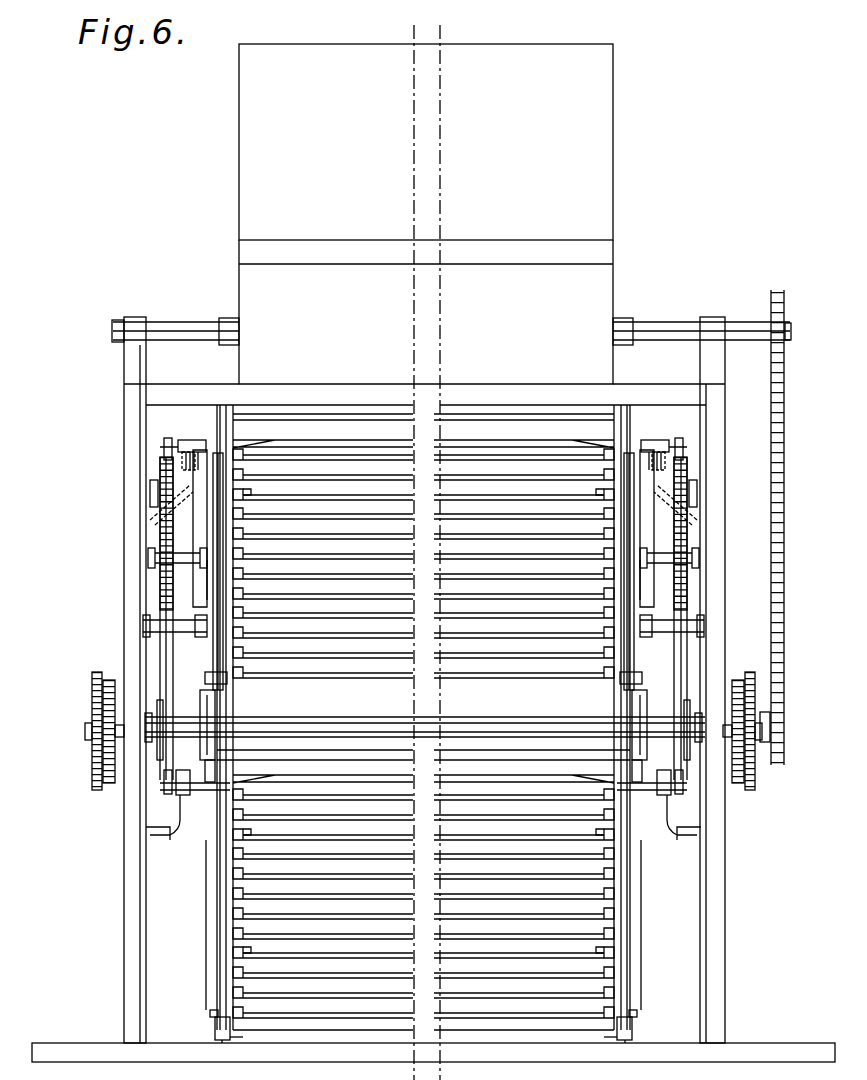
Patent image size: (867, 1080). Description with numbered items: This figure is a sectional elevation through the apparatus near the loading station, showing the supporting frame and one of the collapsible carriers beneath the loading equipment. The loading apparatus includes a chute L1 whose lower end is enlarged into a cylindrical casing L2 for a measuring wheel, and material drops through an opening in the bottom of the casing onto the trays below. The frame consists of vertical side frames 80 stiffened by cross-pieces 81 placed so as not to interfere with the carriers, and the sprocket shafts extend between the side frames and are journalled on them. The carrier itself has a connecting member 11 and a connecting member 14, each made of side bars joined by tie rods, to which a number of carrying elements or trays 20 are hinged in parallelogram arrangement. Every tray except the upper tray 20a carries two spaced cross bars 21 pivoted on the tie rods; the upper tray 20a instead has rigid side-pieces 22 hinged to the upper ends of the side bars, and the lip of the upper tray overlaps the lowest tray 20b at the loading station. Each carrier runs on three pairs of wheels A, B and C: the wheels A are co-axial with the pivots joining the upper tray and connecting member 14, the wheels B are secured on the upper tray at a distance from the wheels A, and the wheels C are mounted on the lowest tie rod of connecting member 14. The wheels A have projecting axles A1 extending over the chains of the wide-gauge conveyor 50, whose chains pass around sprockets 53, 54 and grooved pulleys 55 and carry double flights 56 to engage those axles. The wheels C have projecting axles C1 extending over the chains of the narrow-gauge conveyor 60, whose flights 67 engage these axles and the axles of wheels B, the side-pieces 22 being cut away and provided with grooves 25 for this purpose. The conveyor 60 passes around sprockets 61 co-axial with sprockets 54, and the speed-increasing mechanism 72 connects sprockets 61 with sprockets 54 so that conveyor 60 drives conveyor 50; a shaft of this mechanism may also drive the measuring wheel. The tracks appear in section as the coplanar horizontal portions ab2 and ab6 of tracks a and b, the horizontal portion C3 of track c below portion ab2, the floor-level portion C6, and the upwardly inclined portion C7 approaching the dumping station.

The chute L1 is at (598, 147).
The cylindrical casing L2 is at (605, 292).
The cross-pieces 81 is at (622, 390).
The grooves 25 is at (640, 440).
The vertical side frames 80 is at (727, 880).
The connecting member 14 is at (627, 922).
The connecting member 11 is at (626, 932).
The side-pieces 22 is at (627, 440).
The carrying elements or trays 20 is at (338, 920).
The cross bars 21 is at (610, 890).
The upper tray 20a is at (400, 772).
The lowest tray 20b is at (548, 1010).
The sprockets 61 is at (632, 760).
The horizontal portion of track c C3 is at (628, 700).
The wheels C is at (632, 1012).
The projecting axles C1 is at (632, 1028).
The horizontal portion of track c C6 is at (625, 1040).
The upwardly inclined portion of track c C7 is at (215, 882).
The narrow-gauge conveyor 60 is at (630, 783).
The projecting axles A1 is at (680, 800).
The double flights 56 is at (690, 784).
The wheels A is at (660, 800).
The wheels B is at (657, 796).
The coplanar horizontal portions of tracks a and b ab2 is at (662, 456).
The coplanar horizontal portions of tracks a and b ab6 is at (663, 842).
The sprockets 53 is at (690, 470).
The grooved pulleys 55 is at (690, 536).
The flights 67 is at (208, 575).
The wide-gauge conveyor 50 is at (690, 650).
The sprockets 54 is at (692, 700).
The speed-increasing mechanism 72 is at (753, 680).